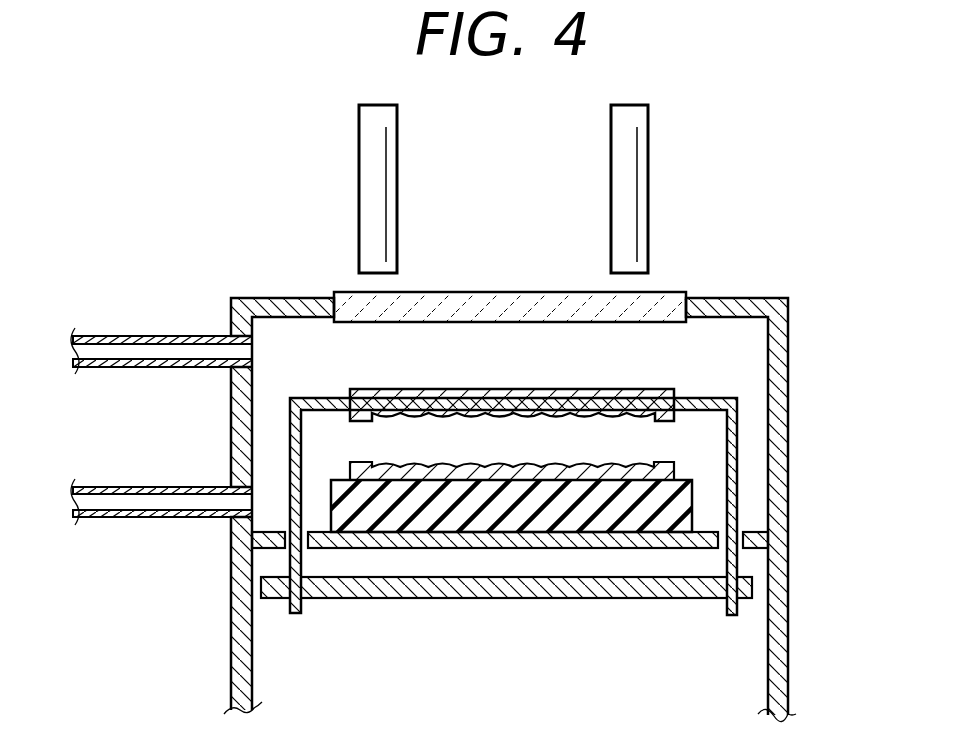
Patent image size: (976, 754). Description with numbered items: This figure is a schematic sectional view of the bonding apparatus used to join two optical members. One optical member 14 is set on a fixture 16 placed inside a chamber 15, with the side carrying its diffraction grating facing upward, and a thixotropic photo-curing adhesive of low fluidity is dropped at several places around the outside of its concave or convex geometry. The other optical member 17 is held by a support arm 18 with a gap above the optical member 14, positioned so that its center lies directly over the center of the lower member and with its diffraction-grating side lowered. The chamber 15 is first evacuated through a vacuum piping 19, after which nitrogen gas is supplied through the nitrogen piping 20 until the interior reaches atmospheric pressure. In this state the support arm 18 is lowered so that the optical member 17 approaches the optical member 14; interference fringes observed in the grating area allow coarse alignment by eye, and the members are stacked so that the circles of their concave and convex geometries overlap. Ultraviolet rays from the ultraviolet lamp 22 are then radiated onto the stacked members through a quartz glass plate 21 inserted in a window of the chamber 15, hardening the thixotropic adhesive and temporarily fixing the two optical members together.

The optical member 14 is at (675, 472).
The chamber 15 is at (789, 362).
The fixture 16 is at (688, 505).
The optical member 17 is at (661, 392).
The support arm 18 is at (738, 428).
The vacuum piping 19 is at (121, 517).
The nitrogen piping 20 is at (133, 336).
The quartz glass plate 21 is at (351, 291).
The ultraviolet lamp 22 is at (397, 170).